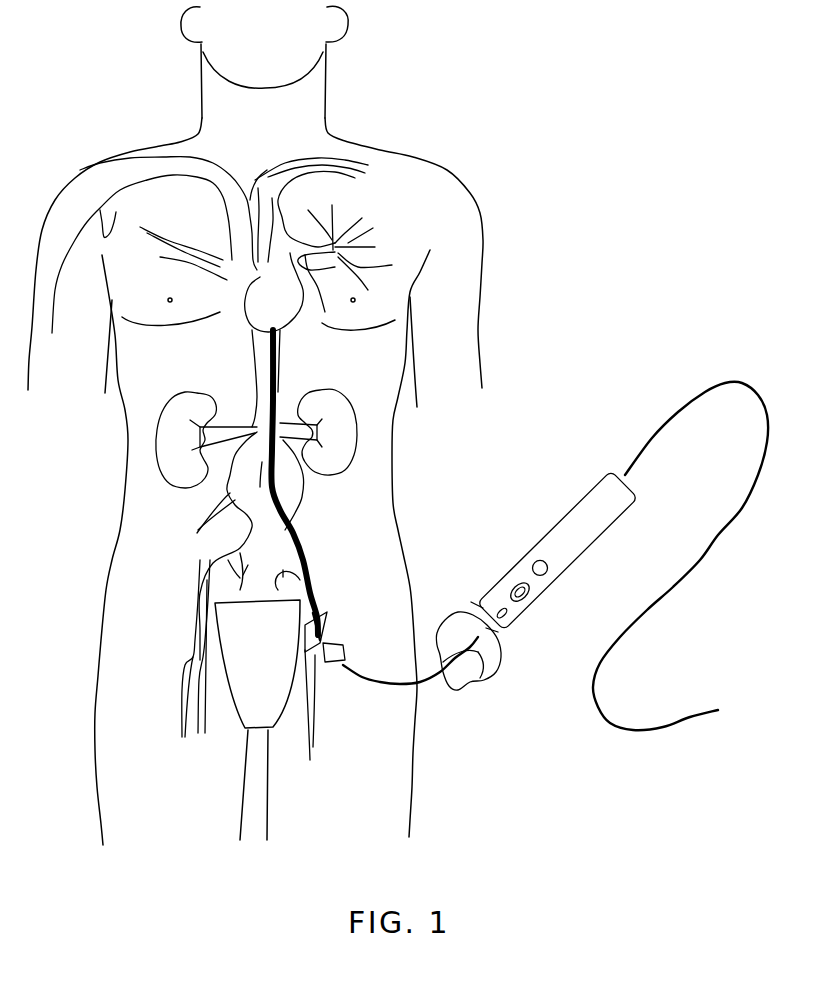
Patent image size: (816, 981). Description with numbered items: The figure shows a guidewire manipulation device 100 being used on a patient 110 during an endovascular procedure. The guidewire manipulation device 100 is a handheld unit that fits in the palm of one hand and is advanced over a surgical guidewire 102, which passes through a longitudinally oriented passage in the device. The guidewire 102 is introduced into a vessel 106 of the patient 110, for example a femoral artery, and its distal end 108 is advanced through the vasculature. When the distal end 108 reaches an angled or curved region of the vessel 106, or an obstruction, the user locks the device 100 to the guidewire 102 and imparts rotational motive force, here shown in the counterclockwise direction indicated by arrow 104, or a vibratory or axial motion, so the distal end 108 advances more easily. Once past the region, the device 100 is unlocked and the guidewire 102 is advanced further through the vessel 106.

The guidewire manipulation device 100 is at (586, 503).
The guidewire 102 is at (340, 653).
The arrow 104 is at (485, 660).
The vessel 106 is at (300, 542).
The distal end 108 is at (278, 392).
The patient 110 is at (403, 150).